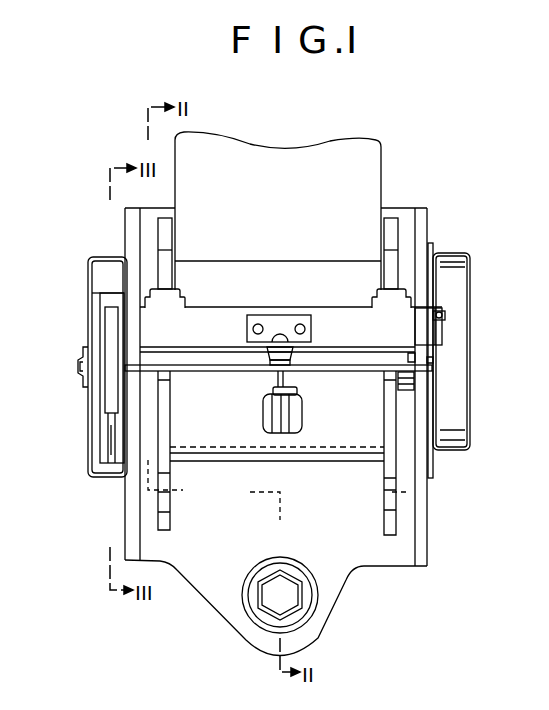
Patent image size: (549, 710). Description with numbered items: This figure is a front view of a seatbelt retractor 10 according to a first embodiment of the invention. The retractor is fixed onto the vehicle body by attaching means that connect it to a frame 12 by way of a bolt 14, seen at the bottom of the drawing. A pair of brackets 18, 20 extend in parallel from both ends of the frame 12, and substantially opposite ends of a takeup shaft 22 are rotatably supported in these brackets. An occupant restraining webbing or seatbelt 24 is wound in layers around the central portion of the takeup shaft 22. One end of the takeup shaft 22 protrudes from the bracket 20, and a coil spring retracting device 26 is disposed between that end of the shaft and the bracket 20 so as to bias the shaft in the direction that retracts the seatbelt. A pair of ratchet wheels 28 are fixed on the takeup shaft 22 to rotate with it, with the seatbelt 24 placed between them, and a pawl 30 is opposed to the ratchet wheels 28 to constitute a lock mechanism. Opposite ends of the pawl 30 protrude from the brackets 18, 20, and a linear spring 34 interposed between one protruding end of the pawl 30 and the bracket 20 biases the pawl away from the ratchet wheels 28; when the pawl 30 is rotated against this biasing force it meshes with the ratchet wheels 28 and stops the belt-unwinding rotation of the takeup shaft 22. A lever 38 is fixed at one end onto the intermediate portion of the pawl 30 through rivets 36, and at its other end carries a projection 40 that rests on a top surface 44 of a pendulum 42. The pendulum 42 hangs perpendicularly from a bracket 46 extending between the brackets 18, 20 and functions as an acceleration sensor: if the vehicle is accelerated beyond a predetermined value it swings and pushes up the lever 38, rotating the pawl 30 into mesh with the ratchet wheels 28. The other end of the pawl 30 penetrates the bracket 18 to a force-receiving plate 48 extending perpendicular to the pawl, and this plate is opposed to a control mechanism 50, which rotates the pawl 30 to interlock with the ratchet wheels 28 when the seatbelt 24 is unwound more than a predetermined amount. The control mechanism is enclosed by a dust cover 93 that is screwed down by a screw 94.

The seatbelt retractor 10 is at (441, 190).
The frame 12 is at (330, 596).
The bolt 14 is at (285, 592).
The bracket 18 is at (130, 525).
The bracket 20 is at (420, 431).
The takeup shaft 22 is at (405, 388).
The seatbelt 24 is at (368, 168).
The coil spring retracting device 26 is at (457, 305).
The ratchet wheels 28 is at (165, 233).
The pawl 30 is at (320, 313).
The linear spring 34 is at (437, 297).
The rivets 36 is at (248, 328).
The lever 38 is at (272, 320).
The projection 40 is at (298, 348).
The pendulum 42 is at (265, 413).
The top surface 44 is at (263, 353).
The bracket 46 is at (185, 370).
The force-receiving plate 48 is at (113, 318).
The control mechanism 50 is at (80, 433).
The dust cover 93 is at (103, 268).
The screw 94 is at (81, 364).